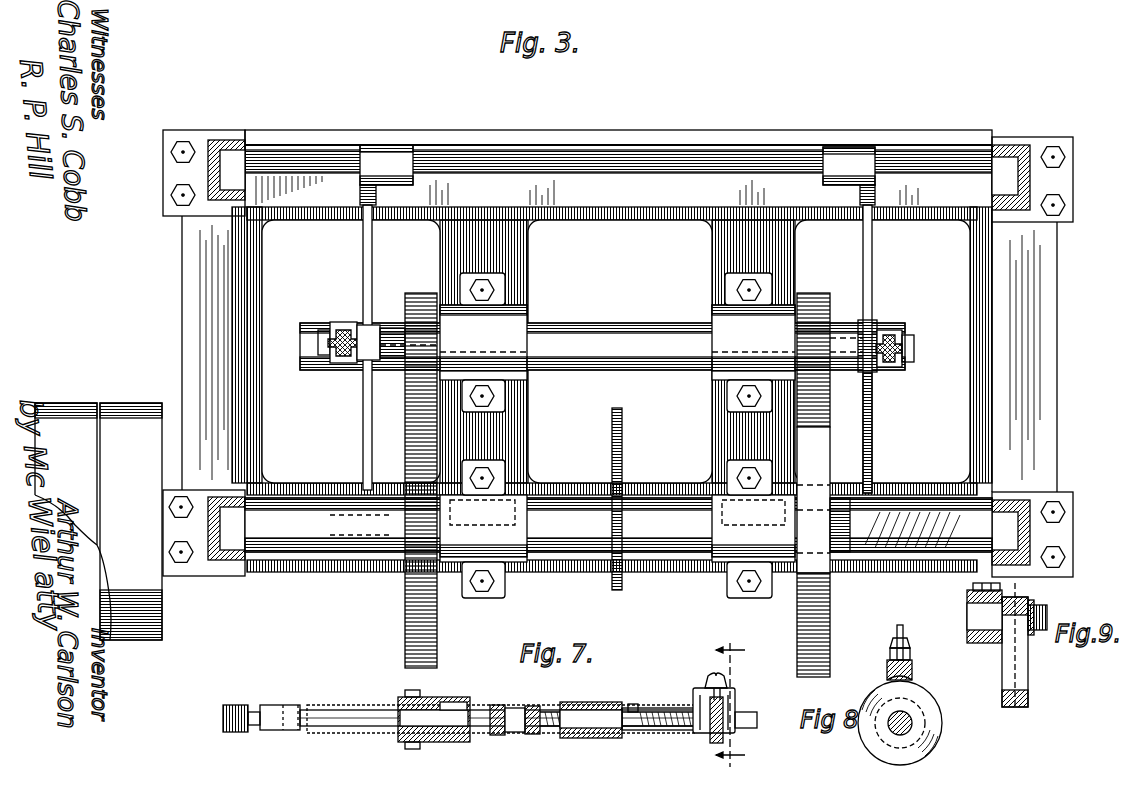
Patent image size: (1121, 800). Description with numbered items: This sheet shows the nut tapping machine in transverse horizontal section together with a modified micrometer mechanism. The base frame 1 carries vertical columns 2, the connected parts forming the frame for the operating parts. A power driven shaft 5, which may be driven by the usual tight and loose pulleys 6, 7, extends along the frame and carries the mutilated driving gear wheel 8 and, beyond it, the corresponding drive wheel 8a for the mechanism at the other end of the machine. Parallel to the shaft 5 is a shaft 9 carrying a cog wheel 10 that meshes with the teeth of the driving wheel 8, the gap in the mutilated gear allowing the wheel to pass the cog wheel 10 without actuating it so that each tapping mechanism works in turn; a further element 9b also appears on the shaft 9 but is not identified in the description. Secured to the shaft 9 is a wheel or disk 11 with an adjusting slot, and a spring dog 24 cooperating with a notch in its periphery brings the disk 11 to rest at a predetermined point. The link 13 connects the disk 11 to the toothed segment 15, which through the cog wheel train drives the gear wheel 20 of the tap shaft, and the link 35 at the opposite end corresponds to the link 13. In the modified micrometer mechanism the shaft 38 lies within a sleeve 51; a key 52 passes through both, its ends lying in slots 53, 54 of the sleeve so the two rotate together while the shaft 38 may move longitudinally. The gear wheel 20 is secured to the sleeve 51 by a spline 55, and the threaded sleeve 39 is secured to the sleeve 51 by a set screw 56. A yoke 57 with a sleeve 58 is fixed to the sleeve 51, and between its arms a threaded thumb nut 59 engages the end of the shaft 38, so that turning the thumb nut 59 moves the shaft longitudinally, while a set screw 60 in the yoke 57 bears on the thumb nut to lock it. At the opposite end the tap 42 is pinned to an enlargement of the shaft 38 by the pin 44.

In FIG. 3, the base frame 1 is at (198, 328).
In FIG. 3, the vertical columns 2 is at (212, 145).
In FIG. 3, the power driven shaft 5 is at (333, 560).
In FIG. 3, the tight pulley 6 is at (66, 474).
In FIG. 3, the loose pulley 7 is at (129, 521).
In FIG. 3, the gear wheel 8 is at (437, 650).
In FIG. 7, the gear wheel 8 is at (734, 697).
In FIG. 3, the drive wheel 8a is at (832, 660).
In FIG. 3, the shaft 9 is at (590, 340).
In FIG. 3, the thin gear 9b is at (625, 590).
In FIG. 3, the cog wheel 10 is at (410, 295).
In FIG. 3, the wheel or disk 11 is at (363, 423).
In FIG. 3, the link 13 is at (340, 328).
In FIG. 9, the segment 15 is at (1028, 672).
In FIG. 7, the gear wheel 20 is at (418, 697).
In FIG. 3, the spring dog 24 is at (378, 192).
In FIG. 3, the link 35 is at (893, 330).
In FIG. 7, the shaft 38 is at (360, 730).
In FIG. 8, the shaft 38 is at (915, 722).
In FIG. 7, the collar 39 is at (590, 704).
In FIG. 7, the tap 42 is at (236, 705).
In FIG. 7, the pin 44 is at (285, 710).
In FIG. 7, the sleeve 51 is at (545, 705).
In FIG. 7, the key 52 is at (514, 735).
In FIG. 7, the slot 53 is at (530, 706).
In FIG. 7, the slot 54 is at (497, 735).
In FIG. 7, the spline 55 is at (458, 702).
In FIG. 7, the set screw 56 is at (633, 704).
In FIG. 7, the yoke 57 is at (735, 695).
In FIG. 8, the yoke 57 is at (915, 667).
In FIG. 7, the sleeve 58 is at (672, 712).
In FIG. 7, the thumb nut 59 is at (710, 735).
In FIG. 8, the thumb nut 59 is at (930, 706).
In FIG. 7, the set screw 60 is at (712, 676).
In FIG. 8, the set screw 60 is at (908, 640).